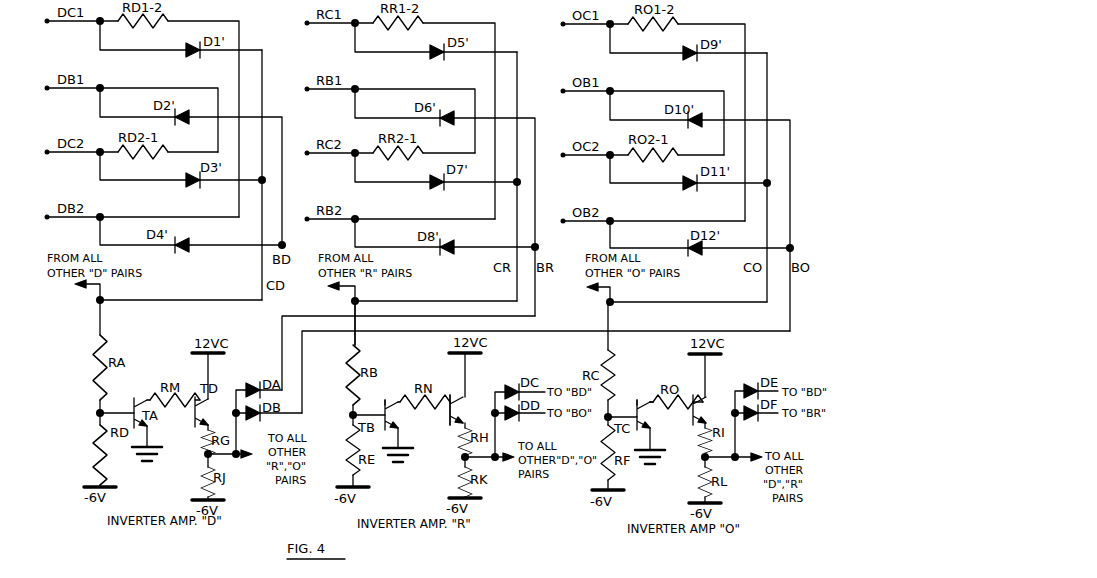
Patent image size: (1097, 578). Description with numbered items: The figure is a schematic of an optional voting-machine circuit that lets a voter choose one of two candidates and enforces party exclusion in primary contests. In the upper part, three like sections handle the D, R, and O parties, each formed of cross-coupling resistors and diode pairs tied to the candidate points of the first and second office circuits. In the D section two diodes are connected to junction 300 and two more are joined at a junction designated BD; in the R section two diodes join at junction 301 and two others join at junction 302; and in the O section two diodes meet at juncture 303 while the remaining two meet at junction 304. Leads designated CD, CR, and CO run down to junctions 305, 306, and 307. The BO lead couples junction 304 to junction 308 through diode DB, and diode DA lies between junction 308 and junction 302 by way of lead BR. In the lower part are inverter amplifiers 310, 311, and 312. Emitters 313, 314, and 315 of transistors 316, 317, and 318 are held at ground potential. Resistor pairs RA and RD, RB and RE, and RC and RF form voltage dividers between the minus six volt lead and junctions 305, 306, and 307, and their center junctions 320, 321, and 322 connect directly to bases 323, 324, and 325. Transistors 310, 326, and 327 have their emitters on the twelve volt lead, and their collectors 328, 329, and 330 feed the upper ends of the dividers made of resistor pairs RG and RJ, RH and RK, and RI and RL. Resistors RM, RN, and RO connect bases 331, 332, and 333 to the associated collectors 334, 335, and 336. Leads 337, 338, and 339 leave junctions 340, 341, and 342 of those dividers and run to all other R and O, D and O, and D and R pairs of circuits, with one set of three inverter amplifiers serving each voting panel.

The junction 300 is at (268, 180).
The junction 301 is at (523, 182).
The junction 302 is at (540, 247).
The juncture 303 is at (773, 183).
The junction 304 is at (798, 240).
The junction 305 is at (104, 296).
The junction 306 is at (359, 297).
The junction 307 is at (614, 298).
The junction 308 is at (234, 395).
The inverter amplifier 310 is at (187, 393).
The inverter amplifier 311 is at (414, 372).
The inverter amplifier 312 is at (650, 378).
The emitter 313 is at (144, 433).
The emitter 314 is at (395, 420).
The emitter 315 is at (640, 420).
The transistor 316 is at (112, 374).
The transistor 317 is at (384, 405).
The transistor 318 is at (633, 402).
The center junction 320 is at (96, 413).
The center junction 321 is at (349, 415).
The center junction 322 is at (600, 422).
The base 323 is at (106, 450).
The base 324 is at (390, 438).
The base 325 is at (644, 457).
The transistor 326 is at (445, 392).
The transistor 327 is at (690, 394).
The collector 328 is at (225, 413).
The collector 329 is at (460, 410).
The collector 330 is at (704, 410).
The base 331 is at (194, 428).
The base 332 is at (453, 424).
The base 333 is at (696, 422).
The collector 334 is at (141, 392).
The collector 335 is at (395, 395).
The collector 336 is at (648, 398).
The lead 337 is at (242, 457).
The lead 338 is at (502, 459).
The lead 339 is at (742, 452).
The junction 340 is at (204, 454).
The junction 341 is at (459, 457).
The junction 342 is at (712, 453).